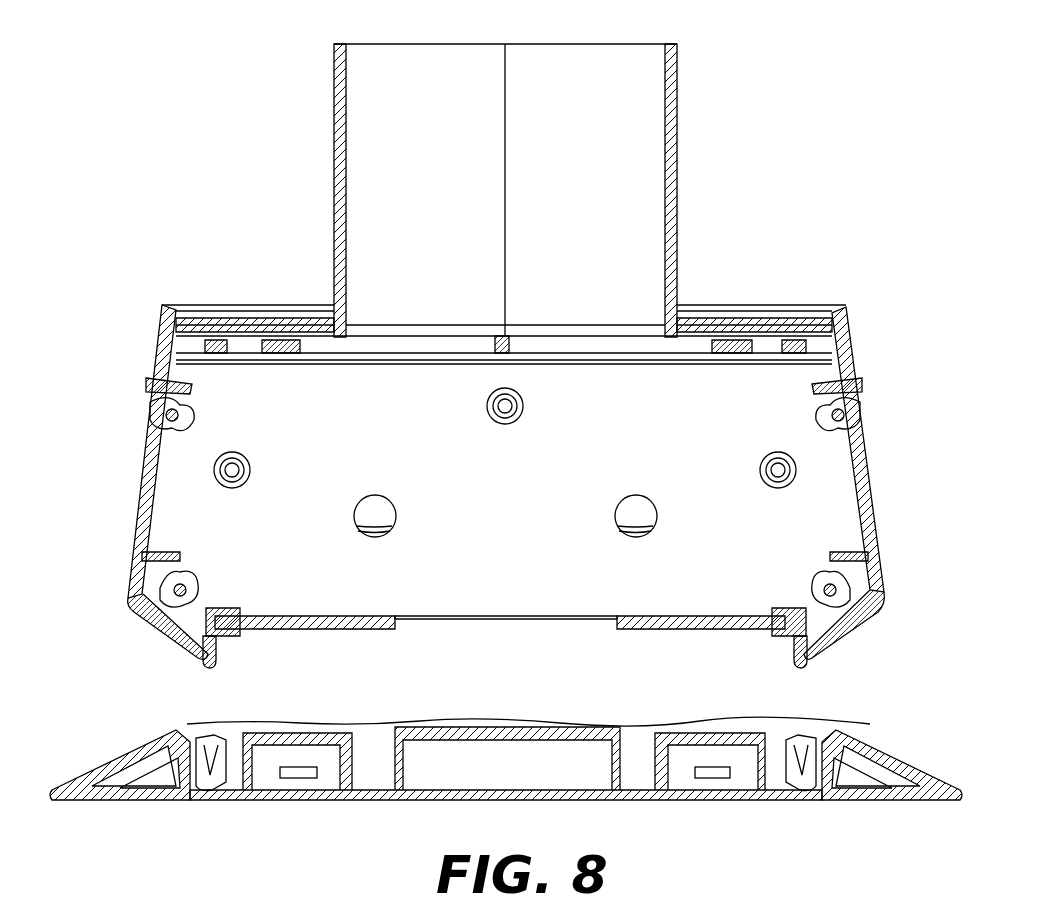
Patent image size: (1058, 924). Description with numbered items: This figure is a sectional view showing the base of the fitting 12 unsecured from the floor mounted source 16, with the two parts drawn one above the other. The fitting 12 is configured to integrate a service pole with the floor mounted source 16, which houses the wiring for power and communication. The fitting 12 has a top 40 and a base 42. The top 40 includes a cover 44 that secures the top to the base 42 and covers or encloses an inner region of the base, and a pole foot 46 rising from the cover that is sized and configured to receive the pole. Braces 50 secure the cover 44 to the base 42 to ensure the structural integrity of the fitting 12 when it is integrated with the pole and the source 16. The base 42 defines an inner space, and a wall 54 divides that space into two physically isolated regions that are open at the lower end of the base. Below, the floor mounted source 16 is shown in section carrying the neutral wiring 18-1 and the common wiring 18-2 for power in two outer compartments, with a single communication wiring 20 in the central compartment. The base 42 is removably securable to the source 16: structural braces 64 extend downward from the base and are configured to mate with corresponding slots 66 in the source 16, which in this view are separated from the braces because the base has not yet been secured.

The fitting 12 is at (130, 238).
The floor mounted source 16 is at (112, 748).
The neutral wiring 18-1 is at (270, 760).
The common wiring 18-2 is at (686, 760).
The communication wiring 20 is at (490, 760).
The top 40 is at (295, 153).
The base 42 is at (118, 470).
The cover 44 is at (735, 320).
The pole foot 46 is at (680, 108).
The braces 50 is at (292, 325).
The wall 54 is at (763, 415).
The structural braces 64 is at (210, 652).
The slots 66 is at (207, 760).